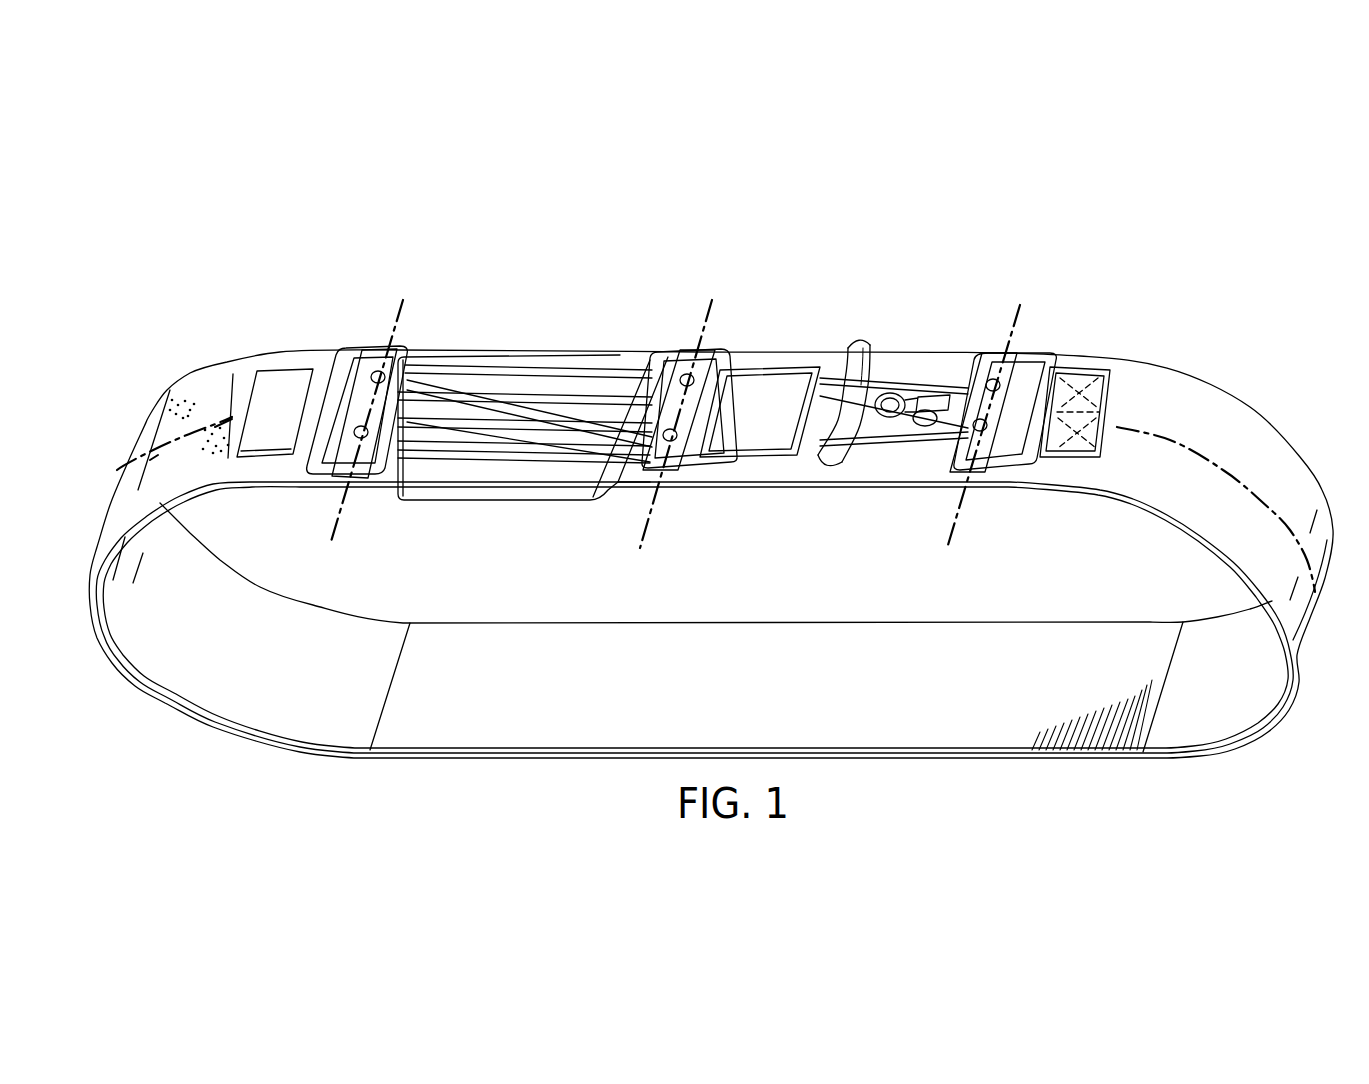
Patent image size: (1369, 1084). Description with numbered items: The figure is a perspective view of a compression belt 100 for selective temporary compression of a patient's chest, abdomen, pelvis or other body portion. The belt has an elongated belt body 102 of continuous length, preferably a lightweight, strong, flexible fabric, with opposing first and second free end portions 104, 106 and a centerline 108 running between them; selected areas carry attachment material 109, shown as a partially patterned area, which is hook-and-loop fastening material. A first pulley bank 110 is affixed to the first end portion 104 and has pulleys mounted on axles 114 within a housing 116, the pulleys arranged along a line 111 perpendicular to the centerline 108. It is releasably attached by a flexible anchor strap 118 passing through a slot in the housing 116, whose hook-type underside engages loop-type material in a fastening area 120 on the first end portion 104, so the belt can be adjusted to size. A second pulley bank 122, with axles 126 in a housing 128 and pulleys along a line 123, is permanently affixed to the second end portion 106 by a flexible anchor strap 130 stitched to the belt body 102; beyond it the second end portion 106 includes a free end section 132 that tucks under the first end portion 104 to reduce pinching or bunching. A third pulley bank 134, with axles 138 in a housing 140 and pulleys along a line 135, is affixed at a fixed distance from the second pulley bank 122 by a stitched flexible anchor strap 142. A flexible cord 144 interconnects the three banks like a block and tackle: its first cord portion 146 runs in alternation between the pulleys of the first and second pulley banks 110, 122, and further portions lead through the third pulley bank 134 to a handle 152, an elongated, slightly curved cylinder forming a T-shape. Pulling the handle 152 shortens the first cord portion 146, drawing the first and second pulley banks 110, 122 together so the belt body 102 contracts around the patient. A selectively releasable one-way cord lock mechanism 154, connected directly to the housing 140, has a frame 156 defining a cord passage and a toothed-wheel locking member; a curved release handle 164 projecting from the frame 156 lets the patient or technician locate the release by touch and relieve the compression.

The compression belt 100 is at (902, 194).
The belt body 102 is at (1262, 430).
The first end portion 104 is at (253, 485).
The second end portion 106 is at (592, 506).
The centerline 108 is at (1188, 453).
The attachment material 109 is at (197, 453).
The first pulley bank 110 is at (362, 334).
The line 111 is at (332, 547).
The axles 114 is at (397, 340).
The housing 116 is at (375, 357).
The flexible anchor strap 118 is at (298, 372).
The fastening area 120 is at (230, 385).
The second pulley bank 122 is at (731, 307).
The line 123 is at (641, 548).
The axles 126 is at (711, 346).
The housing 128 is at (690, 370).
The flexible anchor strap 130 is at (770, 445).
The free end section 132 is at (495, 505).
The third pulley bank 134 is at (1037, 315).
The line 135 is at (955, 545).
The axles 138 is at (1017, 353).
The housing 140 is at (983, 352).
The flexible anchor strap 142 is at (1097, 437).
The flexible cord 144 is at (878, 451).
The first cord portion 146 is at (569, 336).
The handle 152 is at (862, 340).
The cord lock mechanism 154 is at (930, 381).
The frame 156 is at (931, 432).
The curved release handle 164 is at (925, 393).